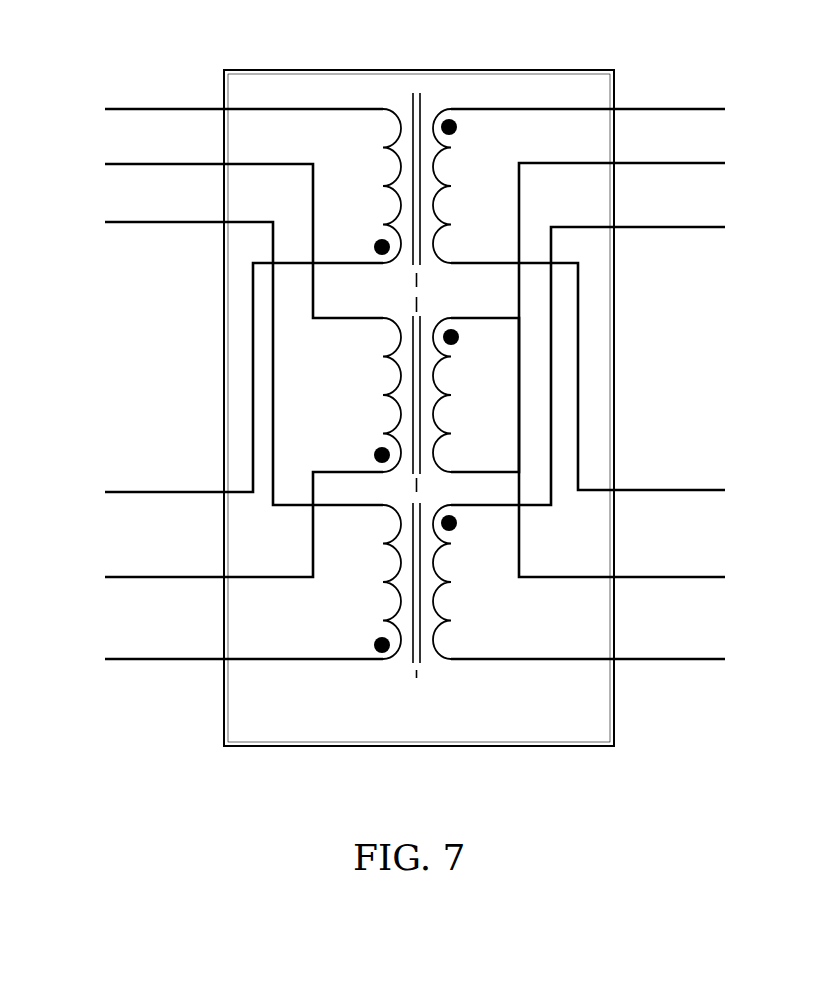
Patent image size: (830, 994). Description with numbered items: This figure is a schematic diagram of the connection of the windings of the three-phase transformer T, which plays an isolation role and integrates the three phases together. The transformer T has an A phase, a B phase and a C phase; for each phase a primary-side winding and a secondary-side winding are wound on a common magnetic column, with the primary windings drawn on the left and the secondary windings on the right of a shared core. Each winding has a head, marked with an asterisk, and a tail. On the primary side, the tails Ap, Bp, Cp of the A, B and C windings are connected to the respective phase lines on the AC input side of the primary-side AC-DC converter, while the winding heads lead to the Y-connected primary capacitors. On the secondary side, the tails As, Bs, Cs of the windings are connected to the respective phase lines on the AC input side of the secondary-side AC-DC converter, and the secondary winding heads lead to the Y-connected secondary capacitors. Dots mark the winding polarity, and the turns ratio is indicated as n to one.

The transformer T is at (419, 373).
The tail of A-phase primary-side winding Ap is at (217, 382).
The tail of B-phase primary-side winding Bp is at (217, 524).
The tail of C-phase primary-side winding Cp is at (216, 646).
The tail of A-phase secondary-side winding As is at (612, 106).
The tail of B-phase secondary-side winding Bs is at (612, 314).
The tail of C-phase secondary-side winding Cs is at (612, 357).